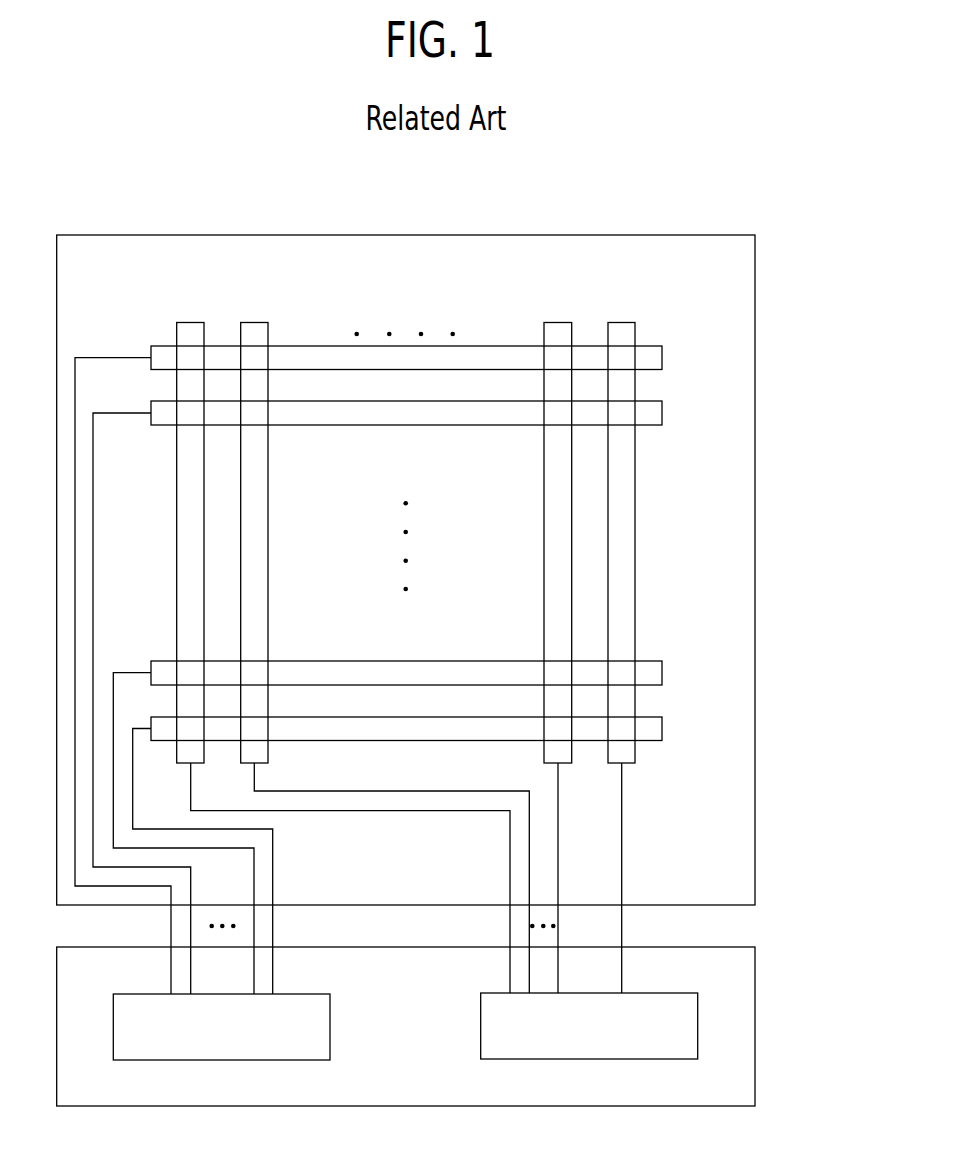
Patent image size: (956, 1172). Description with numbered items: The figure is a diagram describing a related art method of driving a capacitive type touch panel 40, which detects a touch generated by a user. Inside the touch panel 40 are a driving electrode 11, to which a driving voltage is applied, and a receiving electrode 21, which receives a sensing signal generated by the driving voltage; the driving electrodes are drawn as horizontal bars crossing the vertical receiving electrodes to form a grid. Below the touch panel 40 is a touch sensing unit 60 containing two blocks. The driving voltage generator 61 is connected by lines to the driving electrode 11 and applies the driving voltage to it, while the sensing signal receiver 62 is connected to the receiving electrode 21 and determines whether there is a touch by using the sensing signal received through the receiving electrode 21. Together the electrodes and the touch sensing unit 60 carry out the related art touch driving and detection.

The driving electrode 11 is at (662, 358).
The receiving electrode 21 is at (620, 322).
The touch panel 40 is at (755, 560).
The touch sensing unit 60 is at (755, 1017).
The driving voltage generator 61 is at (207, 1038).
The sensing signal receiver 62 is at (573, 1037).